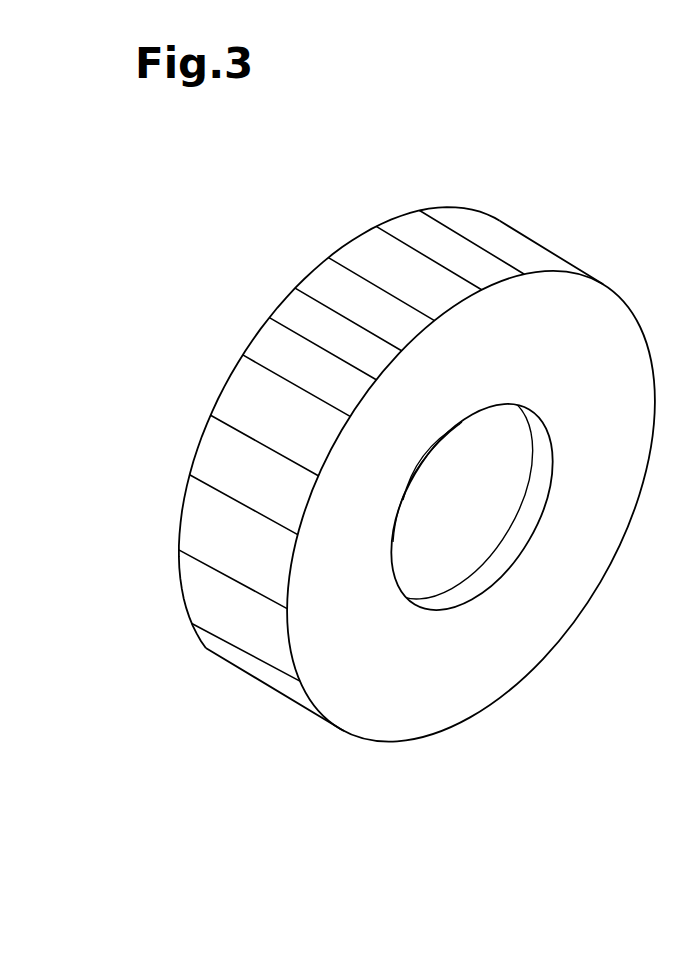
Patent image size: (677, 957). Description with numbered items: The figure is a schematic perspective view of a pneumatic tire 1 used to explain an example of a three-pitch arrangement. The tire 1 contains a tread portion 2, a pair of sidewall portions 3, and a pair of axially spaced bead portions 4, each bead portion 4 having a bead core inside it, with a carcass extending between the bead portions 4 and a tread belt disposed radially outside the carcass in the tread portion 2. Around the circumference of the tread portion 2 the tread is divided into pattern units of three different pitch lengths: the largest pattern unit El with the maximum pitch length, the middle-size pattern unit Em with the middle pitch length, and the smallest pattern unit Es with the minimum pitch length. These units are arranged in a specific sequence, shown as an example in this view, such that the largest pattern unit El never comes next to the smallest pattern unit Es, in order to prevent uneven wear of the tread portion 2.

The pneumatic tire 1 is at (428, 500).
The tread portion 2 is at (290, 715).
The sidewall portion 3 is at (448, 685).
The bead portion 4 is at (492, 572).